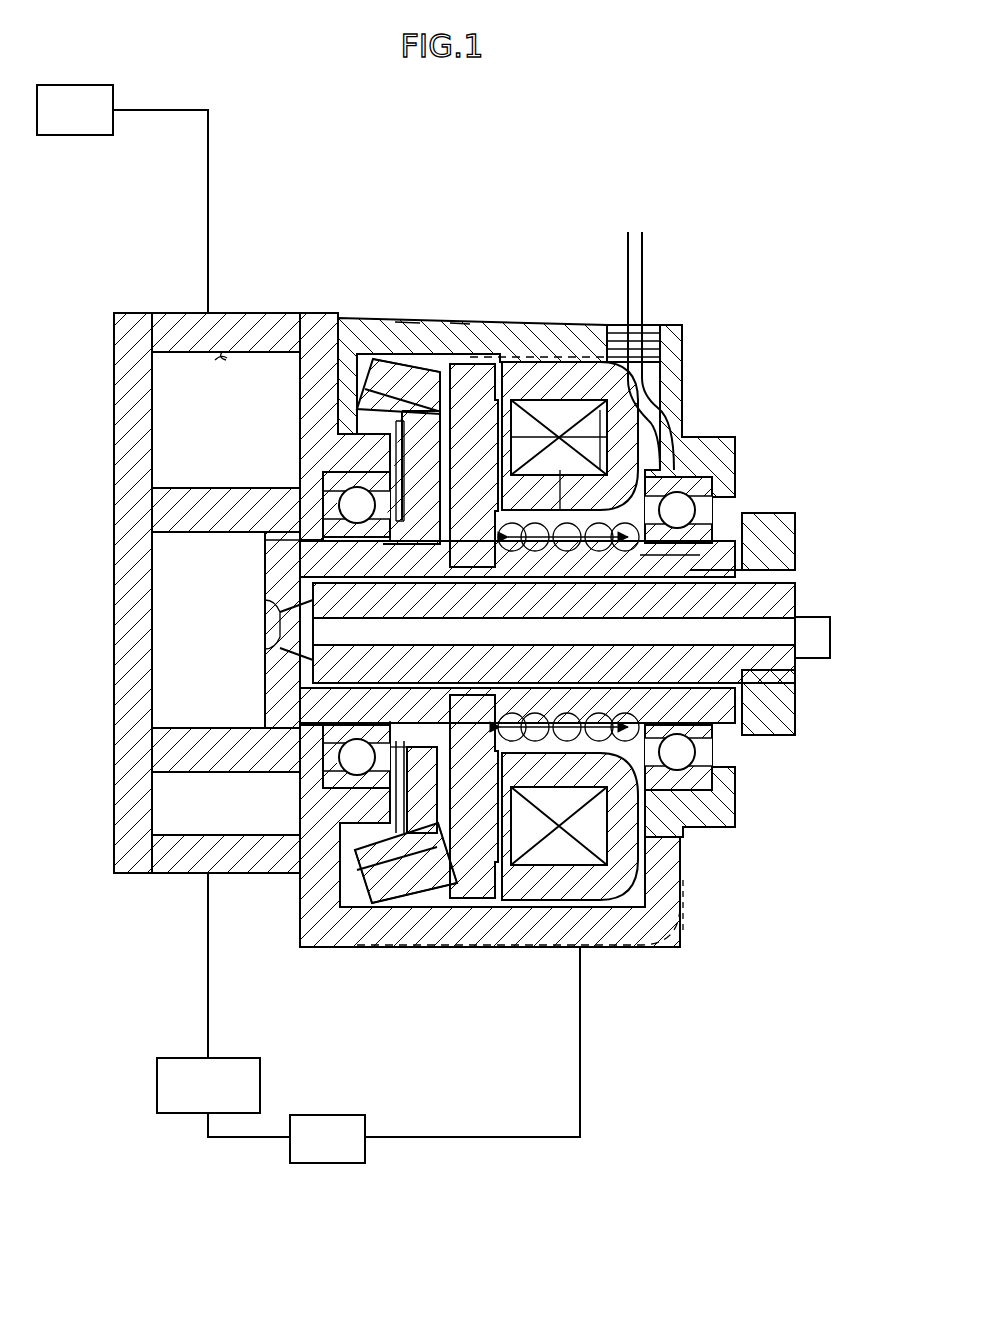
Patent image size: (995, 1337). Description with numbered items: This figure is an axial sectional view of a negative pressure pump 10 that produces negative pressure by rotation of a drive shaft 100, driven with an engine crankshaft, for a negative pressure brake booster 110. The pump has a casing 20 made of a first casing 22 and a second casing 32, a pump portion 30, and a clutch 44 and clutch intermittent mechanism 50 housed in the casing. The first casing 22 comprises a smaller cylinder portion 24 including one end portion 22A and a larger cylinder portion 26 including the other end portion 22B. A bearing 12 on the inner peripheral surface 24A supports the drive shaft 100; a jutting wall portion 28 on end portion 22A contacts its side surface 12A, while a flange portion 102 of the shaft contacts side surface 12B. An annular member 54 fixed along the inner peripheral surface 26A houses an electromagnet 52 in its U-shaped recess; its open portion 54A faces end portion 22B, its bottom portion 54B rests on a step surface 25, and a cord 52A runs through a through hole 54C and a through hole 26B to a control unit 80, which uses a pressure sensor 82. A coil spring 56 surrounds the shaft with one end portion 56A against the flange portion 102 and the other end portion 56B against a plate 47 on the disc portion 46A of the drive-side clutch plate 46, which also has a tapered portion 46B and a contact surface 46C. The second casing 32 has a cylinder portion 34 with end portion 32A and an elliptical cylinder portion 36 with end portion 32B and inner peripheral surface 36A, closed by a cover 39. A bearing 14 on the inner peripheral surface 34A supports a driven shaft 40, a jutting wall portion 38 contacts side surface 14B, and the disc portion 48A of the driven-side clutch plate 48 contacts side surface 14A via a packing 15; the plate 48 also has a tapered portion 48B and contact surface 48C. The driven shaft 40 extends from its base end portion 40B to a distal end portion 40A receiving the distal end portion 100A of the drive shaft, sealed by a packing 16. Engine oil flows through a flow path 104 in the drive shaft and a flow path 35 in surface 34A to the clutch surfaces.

The negative pressure pump 10 is at (125, 232).
The bearing 12 is at (720, 510).
The side surface 12A is at (712, 530).
The side surface 12B is at (700, 497).
The bearing 14 is at (342, 476).
The side surface 14A is at (324, 522).
The side surface 14B is at (322, 491).
The packing 15 is at (300, 577).
The packing 16 is at (275, 625).
The casing 20 is at (380, 192).
The first casing 22 is at (352, 316).
The one axial direction end portion 22A is at (725, 463).
The other axial direction end portion 22B is at (331, 318).
The cylinder portion 24 is at (700, 432).
The inner peripheral surface 24A is at (716, 450).
The step surface 25 is at (650, 826).
The cylinder portion 26 is at (460, 324).
The inner peripheral surface 26A is at (400, 320).
The through hole 26B is at (646, 340).
The jutting wall portion 28 is at (722, 487).
The pump portion 30 is at (196, 306).
The second casing 32 is at (319, 311).
The one axial direction end portion 32A is at (340, 454).
The other axial direction end portion 32B is at (114, 344).
The cylinder portion 34 is at (340, 870).
The inner peripheral surface 34A is at (340, 810).
The flow path 35 is at (320, 793).
The cylinder portion 36 is at (256, 313).
The inner peripheral surface 36A is at (222, 356).
The jutting wall portion 38 is at (300, 562).
The cover 39 is at (114, 405).
The driven shaft 40 is at (180, 770).
The distal end portion 40A is at (517, 632).
The base end portion 40B is at (152, 503).
The clutch 44 is at (502, 662).
The drive-side clutch plate 46 is at (442, 872).
The disc portion 46A is at (458, 866).
The tapered portion 46B is at (397, 858).
The contact surface 46C is at (370, 855).
The plate 47 is at (568, 632).
The driven-side clutch plate 48 is at (470, 862).
The disc portion 48A is at (434, 378).
The tapered portion 48B is at (374, 364).
The contact surface 48C is at (390, 360).
The clutch intermittent mechanism 50 is at (575, 615).
The electromagnet 52 is at (505, 878).
The cord 52A is at (642, 246).
The annular member 54 is at (548, 398).
The open portion 54A is at (500, 378).
The bottom portion 54B is at (685, 434).
The through hole 54C is at (602, 404).
The coil spring 56 is at (638, 850).
The one end portion 56A is at (741, 566).
The other end portion 56B is at (575, 560).
The control unit 80 is at (323, 1163).
The pressure sensor 82 is at (155, 1086).
The drive shaft 100 is at (590, 646).
The distal end portion 100A is at (308, 646).
The flange portion 102 is at (575, 468).
The flow path 104 is at (554, 632).
The negative pressure brake booster 110 is at (74, 84).